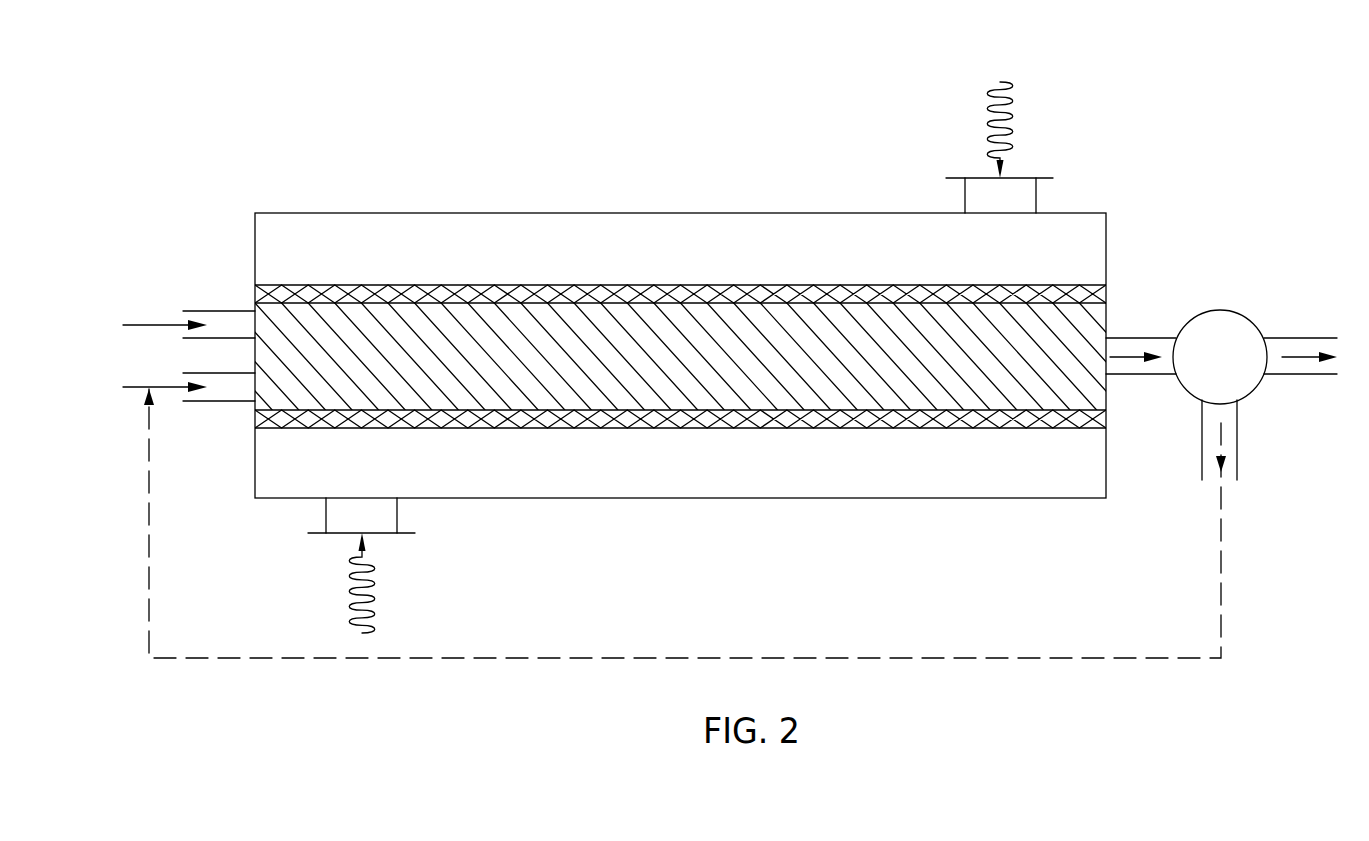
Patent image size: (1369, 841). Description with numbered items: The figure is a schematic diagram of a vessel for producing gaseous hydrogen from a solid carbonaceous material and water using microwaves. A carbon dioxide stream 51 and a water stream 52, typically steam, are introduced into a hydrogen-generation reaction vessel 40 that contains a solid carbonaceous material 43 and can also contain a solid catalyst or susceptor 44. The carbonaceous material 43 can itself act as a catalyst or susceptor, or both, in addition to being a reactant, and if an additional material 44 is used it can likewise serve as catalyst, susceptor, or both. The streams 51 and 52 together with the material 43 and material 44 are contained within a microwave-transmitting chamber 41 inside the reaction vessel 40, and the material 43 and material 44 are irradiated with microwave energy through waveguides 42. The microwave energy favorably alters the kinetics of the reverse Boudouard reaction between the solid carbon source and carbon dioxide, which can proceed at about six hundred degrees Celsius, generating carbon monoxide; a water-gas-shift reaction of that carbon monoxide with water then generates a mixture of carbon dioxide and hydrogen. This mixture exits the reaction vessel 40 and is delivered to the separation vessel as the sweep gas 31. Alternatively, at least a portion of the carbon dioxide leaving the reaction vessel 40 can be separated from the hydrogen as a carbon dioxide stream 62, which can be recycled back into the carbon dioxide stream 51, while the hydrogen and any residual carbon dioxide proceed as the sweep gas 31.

The hydrogen-generation reaction vessel 40 is at (377, 116).
The microwave-transmitting chamber 41 is at (798, 290).
The waveguides 42 is at (978, 197).
The solid carbonaceous material 43 is at (676, 356).
The solid catalyst or susceptor 44 is at (650, 369).
The carbon dioxide stream 51 is at (160, 388).
The water stream 52 is at (153, 325).
The sweep gas 31 is at (1296, 355).
The carbon dioxide stream 62 is at (1221, 437).